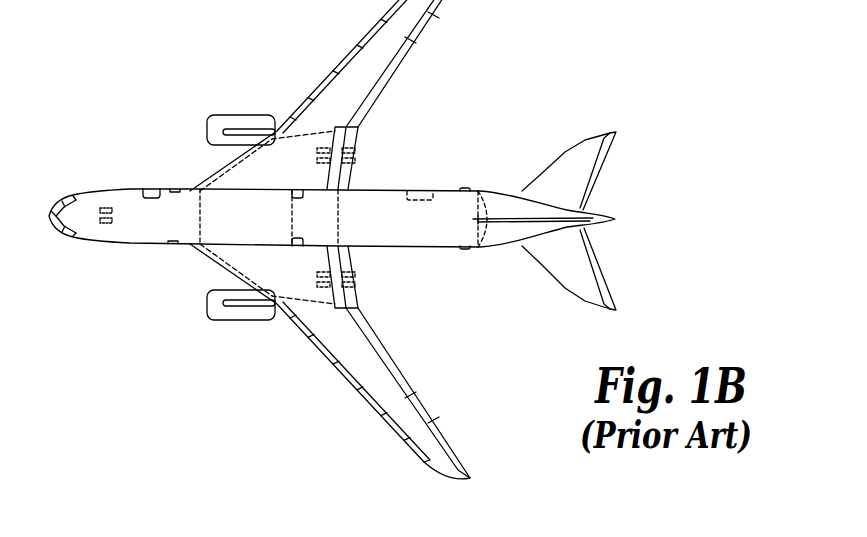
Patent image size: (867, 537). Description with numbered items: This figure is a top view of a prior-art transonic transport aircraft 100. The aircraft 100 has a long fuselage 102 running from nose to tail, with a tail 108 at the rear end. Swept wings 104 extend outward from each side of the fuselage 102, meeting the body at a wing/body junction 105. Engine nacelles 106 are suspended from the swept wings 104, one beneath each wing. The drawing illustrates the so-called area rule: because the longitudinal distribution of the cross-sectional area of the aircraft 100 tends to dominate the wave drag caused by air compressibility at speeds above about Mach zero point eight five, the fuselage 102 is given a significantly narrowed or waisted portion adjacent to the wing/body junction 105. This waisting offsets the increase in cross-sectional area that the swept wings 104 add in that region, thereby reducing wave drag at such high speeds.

The transonic transport aircraft 100 is at (332, 239).
The fuselage 102 is at (160, 246).
The swept wings 104 is at (313, 103).
The wing/body junction 105 is at (180, 177).
The engine nacelles 106 is at (222, 104).
The tail 108 is at (515, 168).